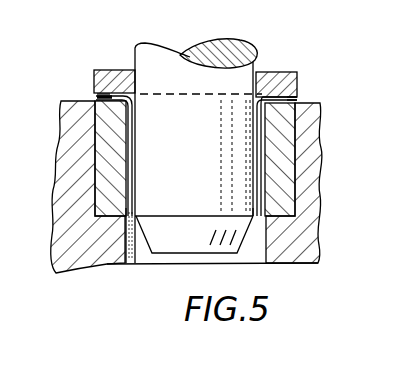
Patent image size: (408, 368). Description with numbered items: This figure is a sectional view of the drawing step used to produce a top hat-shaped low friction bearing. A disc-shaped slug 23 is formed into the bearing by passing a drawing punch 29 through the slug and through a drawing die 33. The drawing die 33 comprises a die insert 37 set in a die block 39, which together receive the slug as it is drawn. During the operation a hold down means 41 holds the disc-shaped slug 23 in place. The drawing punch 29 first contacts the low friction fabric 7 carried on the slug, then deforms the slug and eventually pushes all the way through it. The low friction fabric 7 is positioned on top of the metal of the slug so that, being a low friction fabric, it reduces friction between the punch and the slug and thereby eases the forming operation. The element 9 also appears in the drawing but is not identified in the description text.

The lip 7 is at (100, 94).
The sleeve 9 is at (100, 98).
The gap 23 is at (304, 97).
The bead 29 is at (248, 47).
The bushing 33 is at (284, 177).
The housing 37 is at (113, 166).
The housing bottom 39 is at (98, 245).
The retaining ring 41 is at (113, 70).